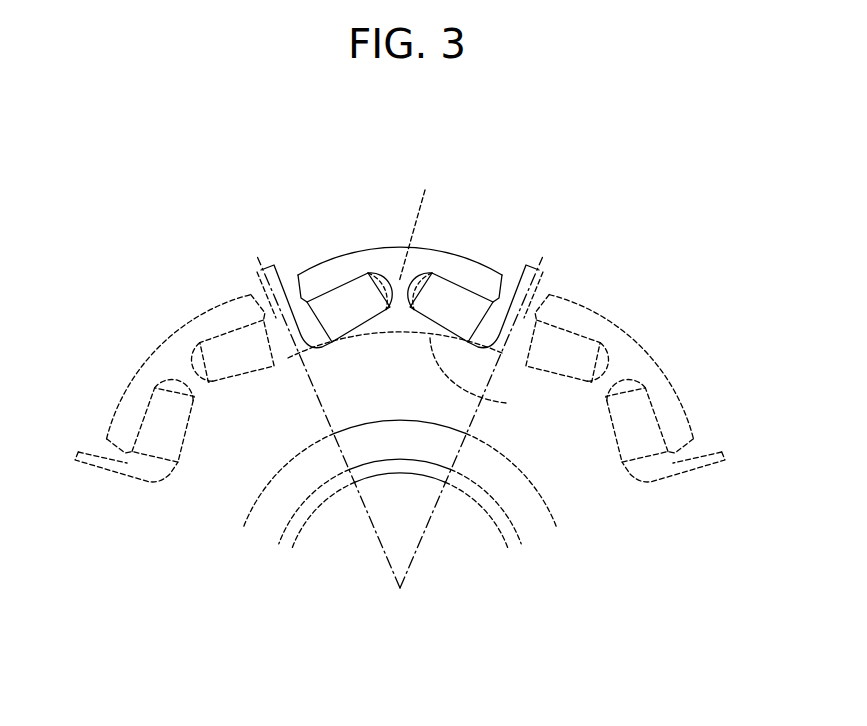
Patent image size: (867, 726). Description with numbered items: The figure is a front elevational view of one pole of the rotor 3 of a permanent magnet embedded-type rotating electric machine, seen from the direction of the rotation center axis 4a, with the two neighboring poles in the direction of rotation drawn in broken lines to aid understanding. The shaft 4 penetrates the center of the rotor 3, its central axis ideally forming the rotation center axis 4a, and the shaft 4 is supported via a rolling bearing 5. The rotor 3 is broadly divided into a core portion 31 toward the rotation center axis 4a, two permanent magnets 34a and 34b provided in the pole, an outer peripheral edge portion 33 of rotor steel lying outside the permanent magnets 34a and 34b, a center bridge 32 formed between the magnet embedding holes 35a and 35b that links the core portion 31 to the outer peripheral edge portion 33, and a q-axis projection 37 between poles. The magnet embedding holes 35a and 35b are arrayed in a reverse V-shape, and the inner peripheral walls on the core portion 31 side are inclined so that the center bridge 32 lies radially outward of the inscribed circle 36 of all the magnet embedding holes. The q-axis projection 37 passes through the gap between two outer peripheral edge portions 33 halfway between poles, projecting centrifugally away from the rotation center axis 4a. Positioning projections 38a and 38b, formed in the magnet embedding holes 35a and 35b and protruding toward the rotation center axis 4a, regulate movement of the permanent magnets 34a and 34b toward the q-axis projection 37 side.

The rotor 3 is at (479, 162).
The shaft 4 is at (410, 512).
The rotation center axis 4a is at (400, 590).
The rolling bearing 5 is at (443, 447).
The core portion 31 is at (411, 378).
The center bridge 32 is at (417, 224).
The outer peripheral edge portion 33 is at (395, 251).
The permanent magnet 34a is at (340, 297).
The permanent magnet 34b is at (458, 302).
The magnet embedding hole 35a is at (377, 283).
The magnet embedding hole 35b is at (426, 283).
The inscribed circle 36 is at (480, 377).
The q-axis projection 37 is at (265, 266).
The positioning projection 38a is at (301, 298).
The positioning projection 38b is at (499, 298).